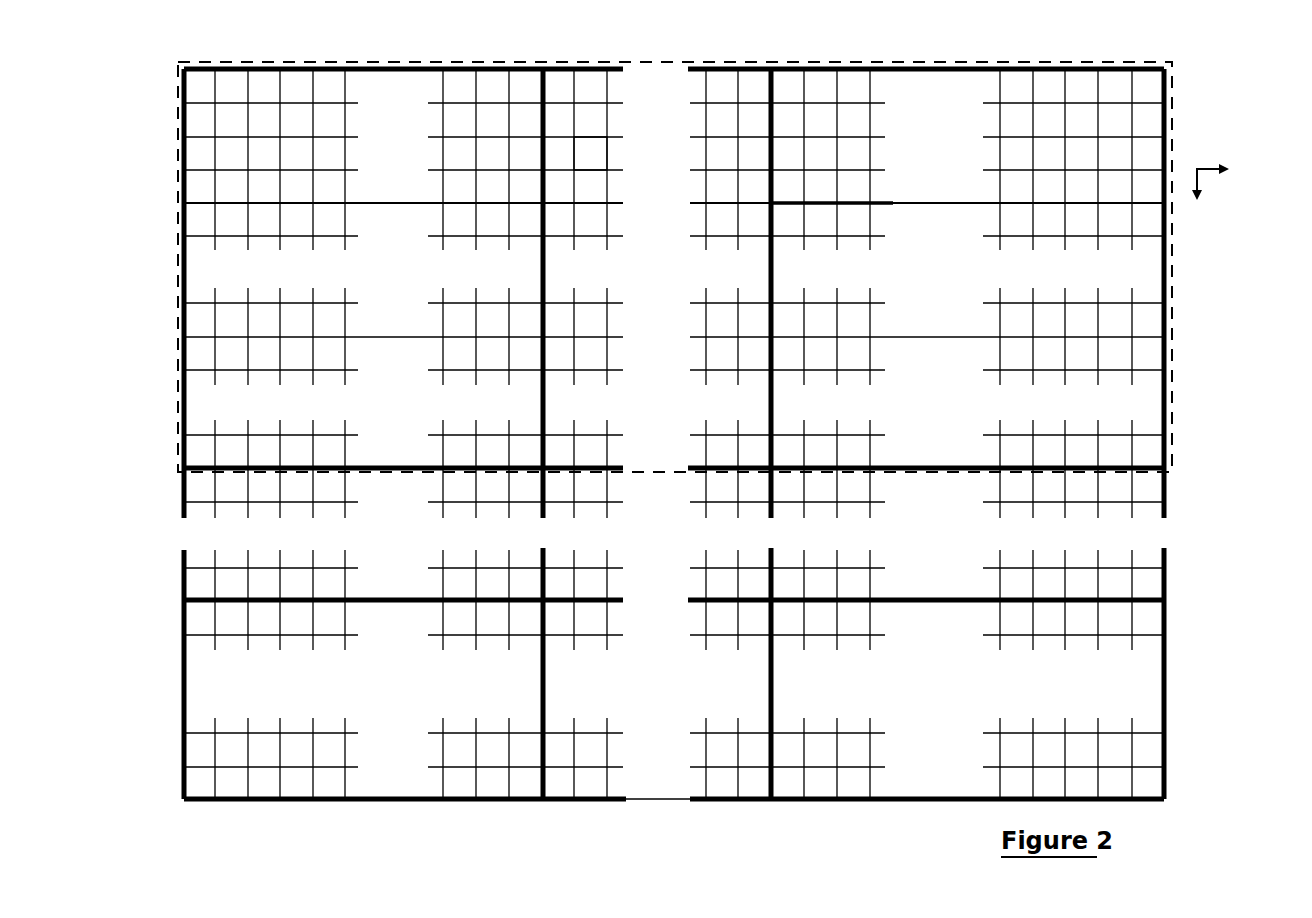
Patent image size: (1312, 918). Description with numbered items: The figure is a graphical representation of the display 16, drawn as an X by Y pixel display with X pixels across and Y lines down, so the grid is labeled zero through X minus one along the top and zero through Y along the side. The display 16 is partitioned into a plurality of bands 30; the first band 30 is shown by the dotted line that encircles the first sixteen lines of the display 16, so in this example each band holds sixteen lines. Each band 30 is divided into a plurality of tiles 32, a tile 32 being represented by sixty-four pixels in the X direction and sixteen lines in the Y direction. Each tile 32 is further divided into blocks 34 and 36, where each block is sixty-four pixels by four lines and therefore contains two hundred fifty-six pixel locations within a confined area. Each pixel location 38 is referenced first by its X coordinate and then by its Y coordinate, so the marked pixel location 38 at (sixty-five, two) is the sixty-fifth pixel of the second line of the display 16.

The display 16 is at (693, 426).
The band 30 is at (1175, 125).
The tile 32 is at (1022, 74).
The block 34 is at (317, 159).
The block 36 is at (315, 310).
The pixel location 38 is at (591, 157).